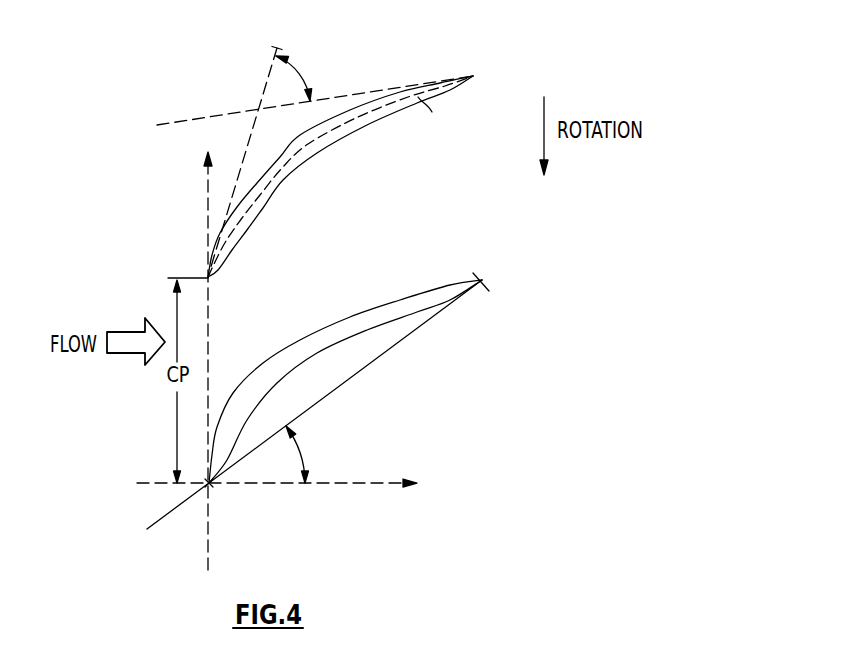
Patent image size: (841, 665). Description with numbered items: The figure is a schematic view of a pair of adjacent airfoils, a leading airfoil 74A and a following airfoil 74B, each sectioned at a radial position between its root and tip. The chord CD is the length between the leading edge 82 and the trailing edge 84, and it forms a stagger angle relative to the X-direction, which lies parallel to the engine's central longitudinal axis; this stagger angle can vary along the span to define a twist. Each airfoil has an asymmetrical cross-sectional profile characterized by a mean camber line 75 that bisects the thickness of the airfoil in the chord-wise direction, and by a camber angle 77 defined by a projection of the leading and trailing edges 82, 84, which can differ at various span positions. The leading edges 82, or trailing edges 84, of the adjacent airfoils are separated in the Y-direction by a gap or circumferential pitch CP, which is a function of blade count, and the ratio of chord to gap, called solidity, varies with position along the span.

The camber angle 77 is at (303, 78).
The mean camber line 75 is at (432, 112).
The following airfoil 74B is at (312, 183).
The leading airfoil 74A is at (374, 290).
The trailing edge 84 is at (481, 280).
The leading edge 82 is at (212, 490).